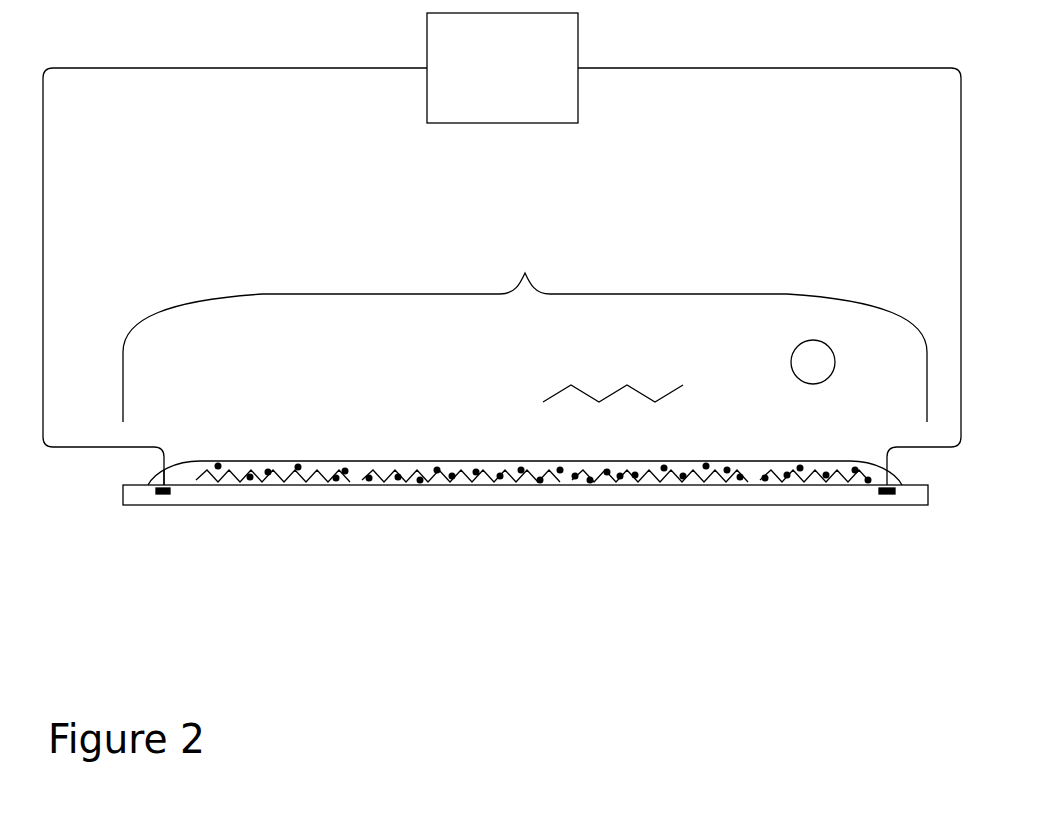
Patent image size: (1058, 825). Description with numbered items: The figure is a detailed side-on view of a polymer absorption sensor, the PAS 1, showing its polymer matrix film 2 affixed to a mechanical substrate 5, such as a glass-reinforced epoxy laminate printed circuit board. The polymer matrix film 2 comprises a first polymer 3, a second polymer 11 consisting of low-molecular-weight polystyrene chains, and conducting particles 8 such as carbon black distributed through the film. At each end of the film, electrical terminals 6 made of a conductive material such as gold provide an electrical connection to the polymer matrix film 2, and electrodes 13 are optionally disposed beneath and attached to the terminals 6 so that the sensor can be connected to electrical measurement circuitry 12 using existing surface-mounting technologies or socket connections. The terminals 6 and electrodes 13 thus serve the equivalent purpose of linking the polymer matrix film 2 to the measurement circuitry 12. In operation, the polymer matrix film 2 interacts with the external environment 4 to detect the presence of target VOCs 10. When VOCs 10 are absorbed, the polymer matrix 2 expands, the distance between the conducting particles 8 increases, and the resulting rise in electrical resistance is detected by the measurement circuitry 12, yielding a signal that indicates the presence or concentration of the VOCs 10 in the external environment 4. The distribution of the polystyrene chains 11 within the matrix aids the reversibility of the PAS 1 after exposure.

The PAS 1 is at (525, 320).
The polymer matrix film 2 is at (497, 460).
The first polymer 3 is at (661, 484).
The external environment 4 is at (813, 362).
The mechanical substrate 5 is at (497, 505).
The electrical terminals 6 is at (167, 482).
The conducting particles 8 is at (363, 477).
The target VOCs 10 is at (555, 390).
The second polymer 11 is at (792, 483).
The electrical measurement circuitry 12 is at (502, 249).
The electrodes 13 is at (160, 495).